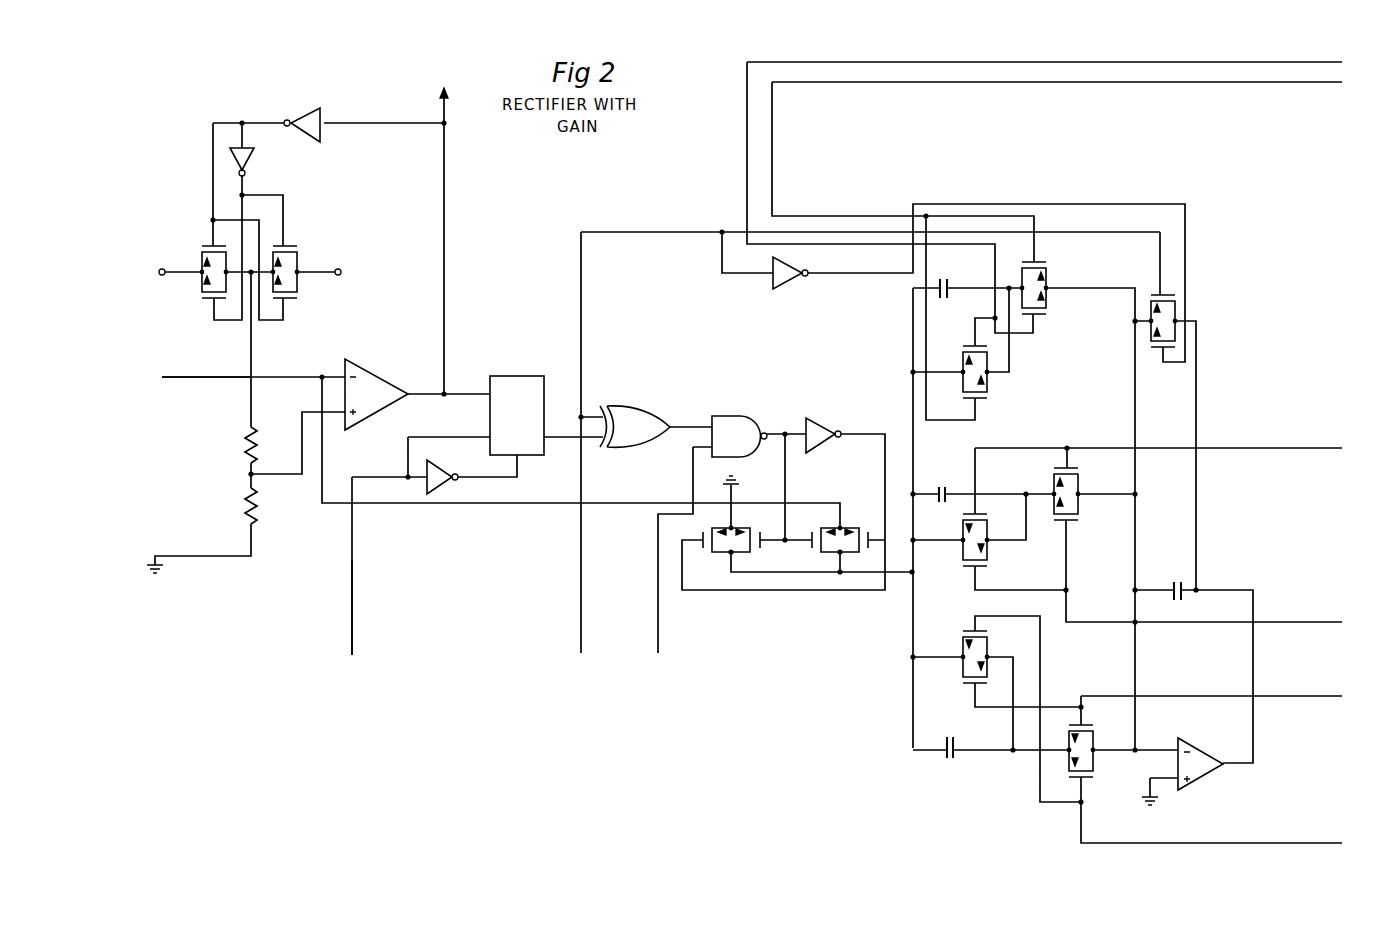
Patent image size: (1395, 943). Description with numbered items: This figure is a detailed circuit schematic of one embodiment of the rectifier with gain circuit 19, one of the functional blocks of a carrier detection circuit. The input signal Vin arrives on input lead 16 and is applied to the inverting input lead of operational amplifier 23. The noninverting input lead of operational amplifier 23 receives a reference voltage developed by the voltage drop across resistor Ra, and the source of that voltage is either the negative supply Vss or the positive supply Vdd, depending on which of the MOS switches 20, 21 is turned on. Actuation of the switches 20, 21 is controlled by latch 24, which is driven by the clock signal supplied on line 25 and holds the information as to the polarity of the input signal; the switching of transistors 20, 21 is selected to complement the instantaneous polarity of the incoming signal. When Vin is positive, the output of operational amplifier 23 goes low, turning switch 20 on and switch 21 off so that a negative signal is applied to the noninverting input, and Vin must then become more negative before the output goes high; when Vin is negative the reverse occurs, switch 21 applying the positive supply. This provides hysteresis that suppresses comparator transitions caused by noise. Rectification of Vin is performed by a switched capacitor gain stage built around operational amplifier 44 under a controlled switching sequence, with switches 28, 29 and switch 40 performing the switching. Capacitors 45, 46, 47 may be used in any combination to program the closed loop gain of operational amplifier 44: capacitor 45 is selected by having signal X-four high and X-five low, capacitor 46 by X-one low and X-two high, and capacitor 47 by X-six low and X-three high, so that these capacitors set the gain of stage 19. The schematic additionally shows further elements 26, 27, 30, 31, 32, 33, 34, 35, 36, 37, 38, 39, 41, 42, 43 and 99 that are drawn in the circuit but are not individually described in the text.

The input lead 16 is at (202, 372).
The rectifier with gain circuit 19 is at (474, 720).
The MOS switch 20 is at (200, 256).
The MOS switch 21 is at (292, 250).
The operational amplifier 23 is at (374, 364).
The latch 24 is at (505, 376).
The line 25 is at (354, 578).
The exclusive-OR gate 26 is at (656, 408).
The NAND gate 27 is at (746, 416).
The switch 28 is at (846, 525).
The switch 29 is at (736, 528).
The transistor 30 is at (988, 386).
The transistor gate 31 is at (980, 376).
The transistor 32 is at (1052, 516).
The transistor gate 33 is at (1045, 504).
The transistor 34 is at (953, 570).
The transistor gate 35 is at (956, 557).
The transistor gate 36 is at (1084, 751).
The transistor 37 is at (1066, 770).
The transistor 38 is at (1050, 314).
The transistor gate 39 is at (1053, 292).
The switch 40 is at (1151, 321).
The transistor 41 is at (1150, 352).
The transistor gate 42 is at (952, 664).
The transistor 43 is at (960, 686).
The operational amplifier 44 is at (1196, 740).
The capacitor 45 is at (948, 258).
The capacitor 46 is at (936, 485).
The capacitor 47 is at (956, 762).
The capacitor 99 is at (1176, 580).